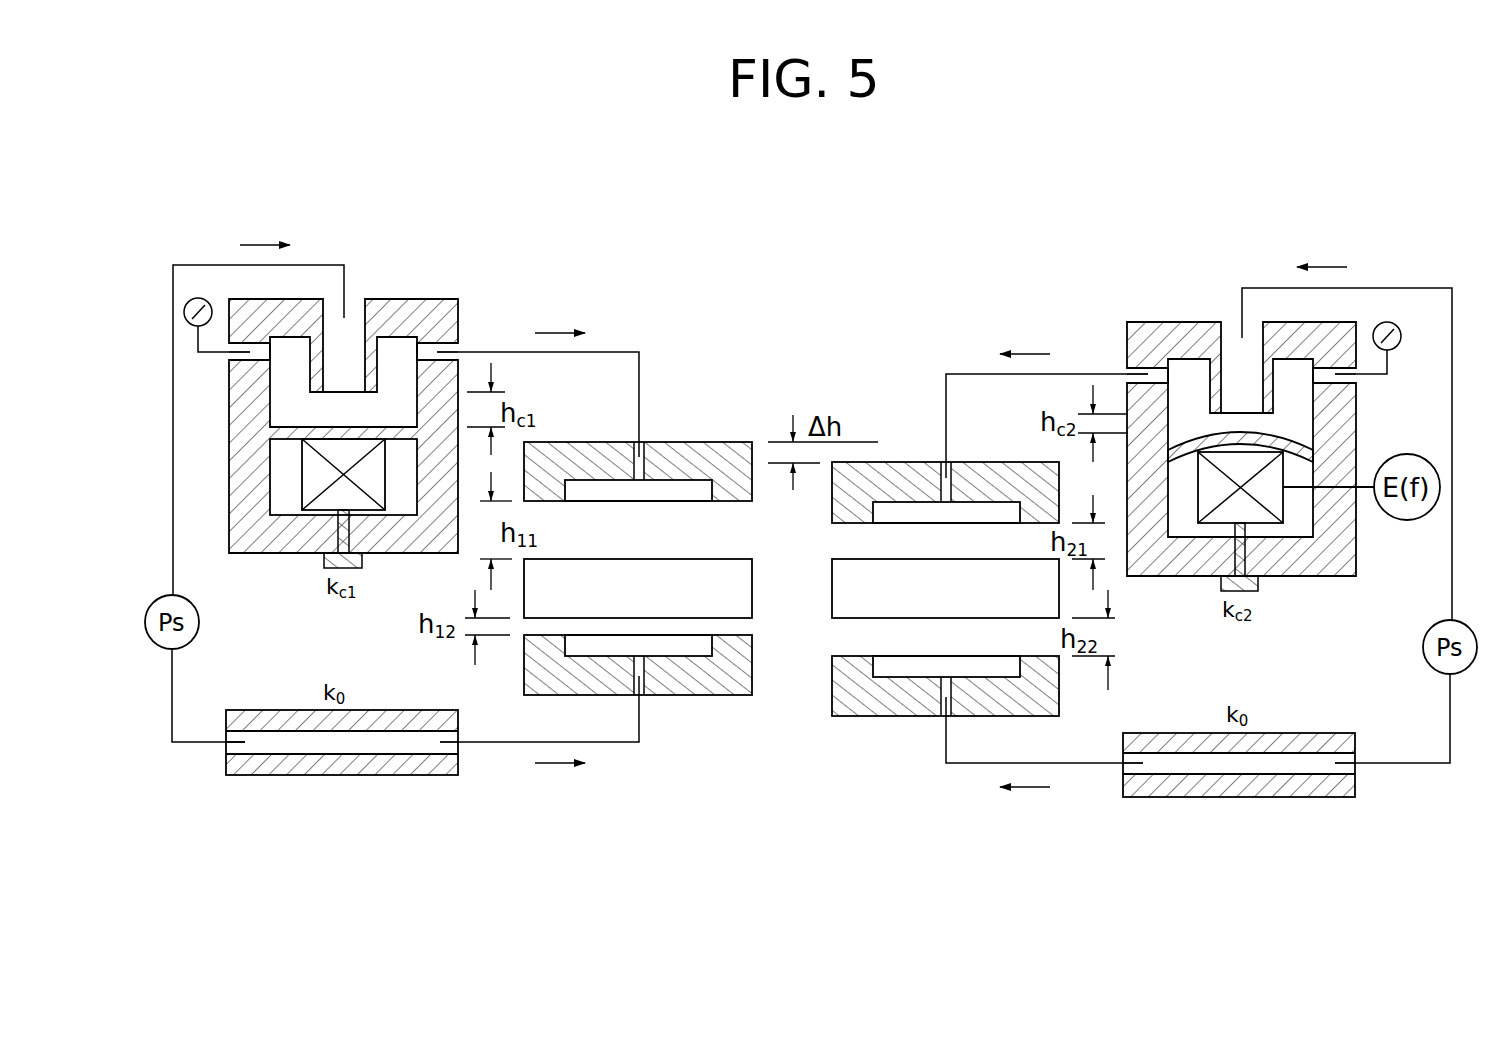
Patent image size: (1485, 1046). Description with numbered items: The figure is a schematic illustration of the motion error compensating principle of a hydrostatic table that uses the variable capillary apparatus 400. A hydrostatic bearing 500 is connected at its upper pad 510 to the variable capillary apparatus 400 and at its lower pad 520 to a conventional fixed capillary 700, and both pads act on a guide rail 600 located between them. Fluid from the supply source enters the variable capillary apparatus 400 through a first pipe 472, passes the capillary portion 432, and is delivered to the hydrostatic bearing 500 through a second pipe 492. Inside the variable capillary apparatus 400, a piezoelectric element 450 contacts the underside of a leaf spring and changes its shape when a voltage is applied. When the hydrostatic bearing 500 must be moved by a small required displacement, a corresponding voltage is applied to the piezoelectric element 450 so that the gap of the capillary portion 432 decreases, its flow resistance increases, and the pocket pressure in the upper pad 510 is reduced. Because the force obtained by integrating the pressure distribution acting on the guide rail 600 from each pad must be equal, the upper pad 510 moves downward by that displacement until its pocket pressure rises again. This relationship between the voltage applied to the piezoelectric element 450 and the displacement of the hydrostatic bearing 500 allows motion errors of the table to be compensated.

The variable capillary apparatus 400 is at (412, 274).
The capillary portion 432 is at (365, 410).
The piezoelectric element 450 is at (315, 477).
The first pipe 472 is at (1266, 288).
The second pipe 492 is at (1075, 373).
The hydrostatic bearing 500 is at (901, 428).
The upper pad 510 is at (690, 455).
The lower pad 520 is at (690, 682).
The guide rail 600 is at (850, 594).
The fixed capillary 700 is at (321, 789).